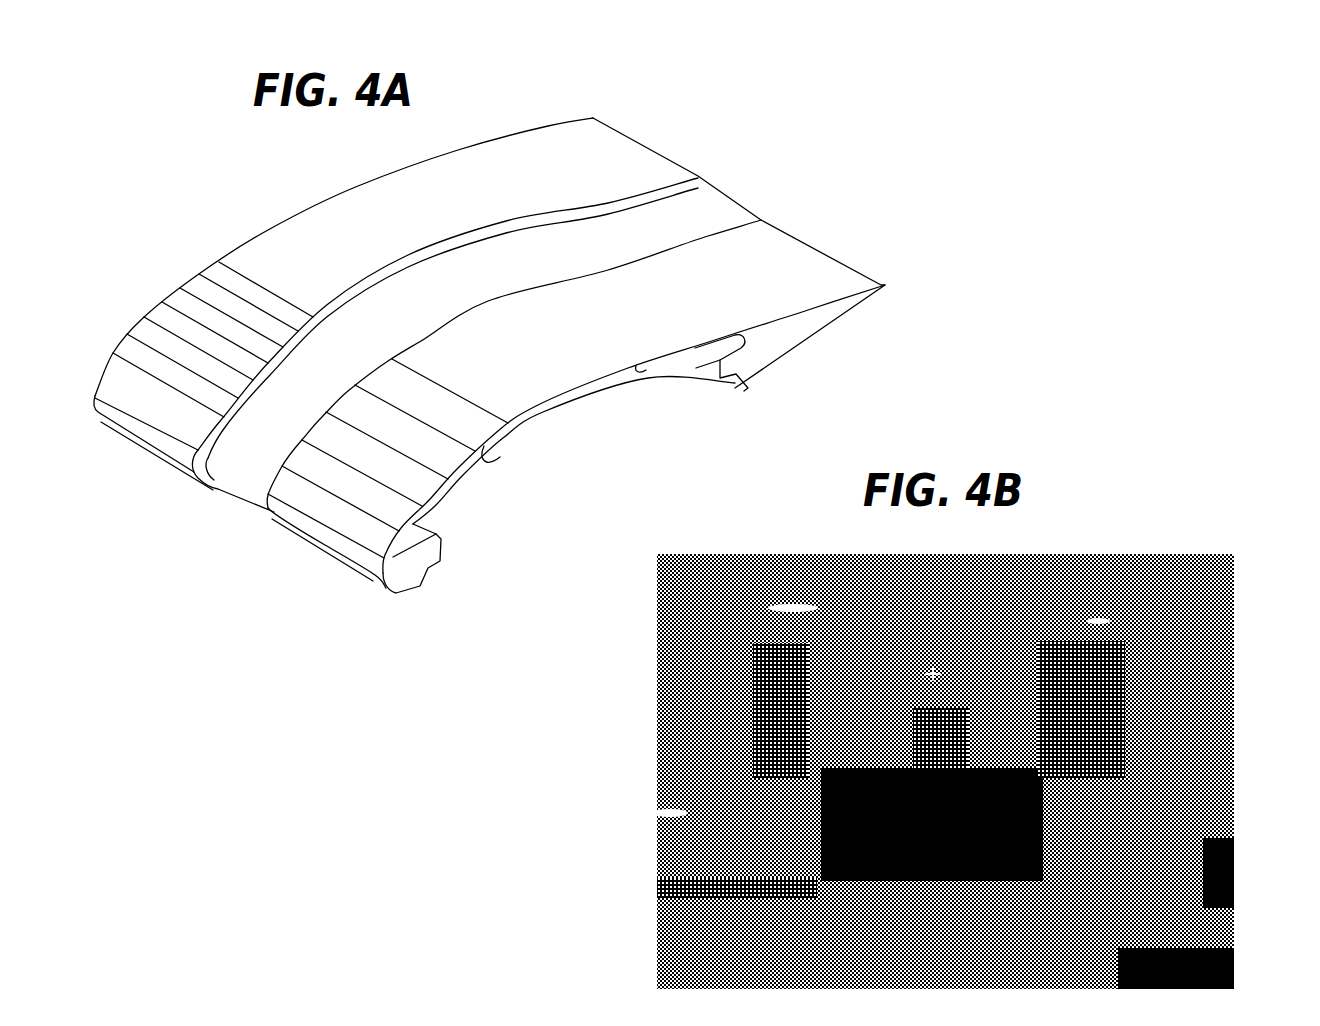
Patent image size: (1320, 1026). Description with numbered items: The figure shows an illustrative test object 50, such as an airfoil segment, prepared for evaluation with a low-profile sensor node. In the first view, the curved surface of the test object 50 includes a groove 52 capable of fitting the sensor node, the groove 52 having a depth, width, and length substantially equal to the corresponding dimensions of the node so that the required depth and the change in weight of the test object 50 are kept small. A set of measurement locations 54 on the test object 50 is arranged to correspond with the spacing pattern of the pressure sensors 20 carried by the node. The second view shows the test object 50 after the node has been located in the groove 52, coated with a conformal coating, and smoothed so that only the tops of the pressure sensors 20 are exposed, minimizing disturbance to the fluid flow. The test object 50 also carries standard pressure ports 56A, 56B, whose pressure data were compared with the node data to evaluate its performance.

In FIG. 4A, the test object 50 is at (181, 191).
In FIG. 4B, the test object 50 is at (1162, 601).
In FIG. 4A, the groove 52 is at (439, 300).
In FIG. 4A, the measurement locations 54 is at (173, 298).
In FIG. 4B, the standard pressure port 56A is at (735, 693).
In FIG. 4B, the standard pressure port 56B is at (1120, 699).
In FIG. 4B, the pressure sensors 20 is at (925, 668).